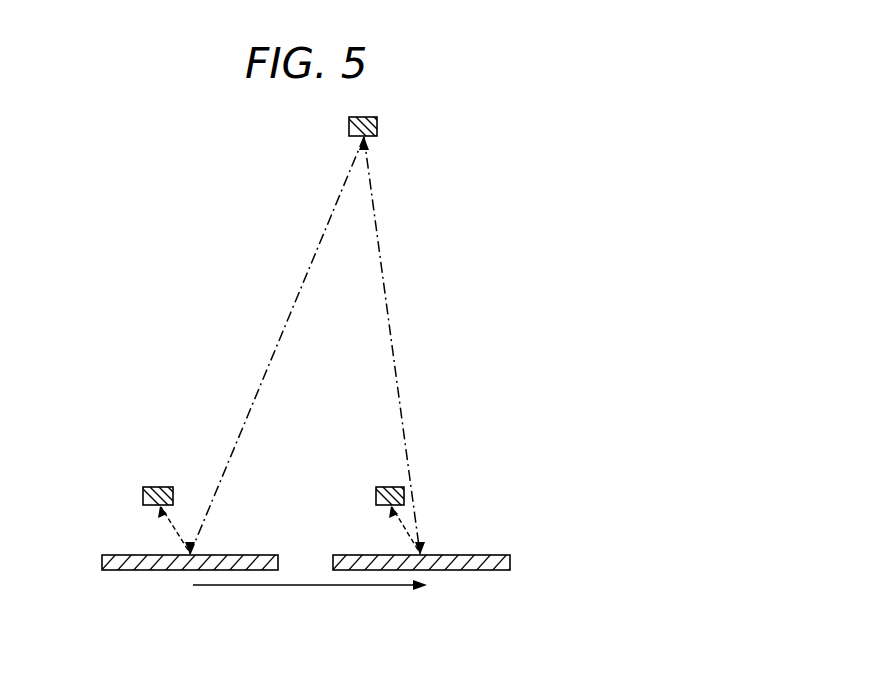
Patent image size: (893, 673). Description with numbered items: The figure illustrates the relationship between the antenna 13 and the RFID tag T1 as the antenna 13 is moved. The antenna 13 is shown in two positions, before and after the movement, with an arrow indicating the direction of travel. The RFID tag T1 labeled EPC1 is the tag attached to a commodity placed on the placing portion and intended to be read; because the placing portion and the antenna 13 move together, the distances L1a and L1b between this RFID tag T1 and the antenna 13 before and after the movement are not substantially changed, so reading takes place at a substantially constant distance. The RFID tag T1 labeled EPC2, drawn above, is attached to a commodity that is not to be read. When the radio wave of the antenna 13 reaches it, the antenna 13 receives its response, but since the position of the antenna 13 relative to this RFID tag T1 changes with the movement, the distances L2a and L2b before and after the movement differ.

The RFID tag T1 is at (378, 127).
The antenna 13 is at (113, 571).
The distance L1a is at (180, 545).
The distance L1b is at (412, 545).
The distance L2a is at (276, 347).
The distance L2b is at (400, 373).